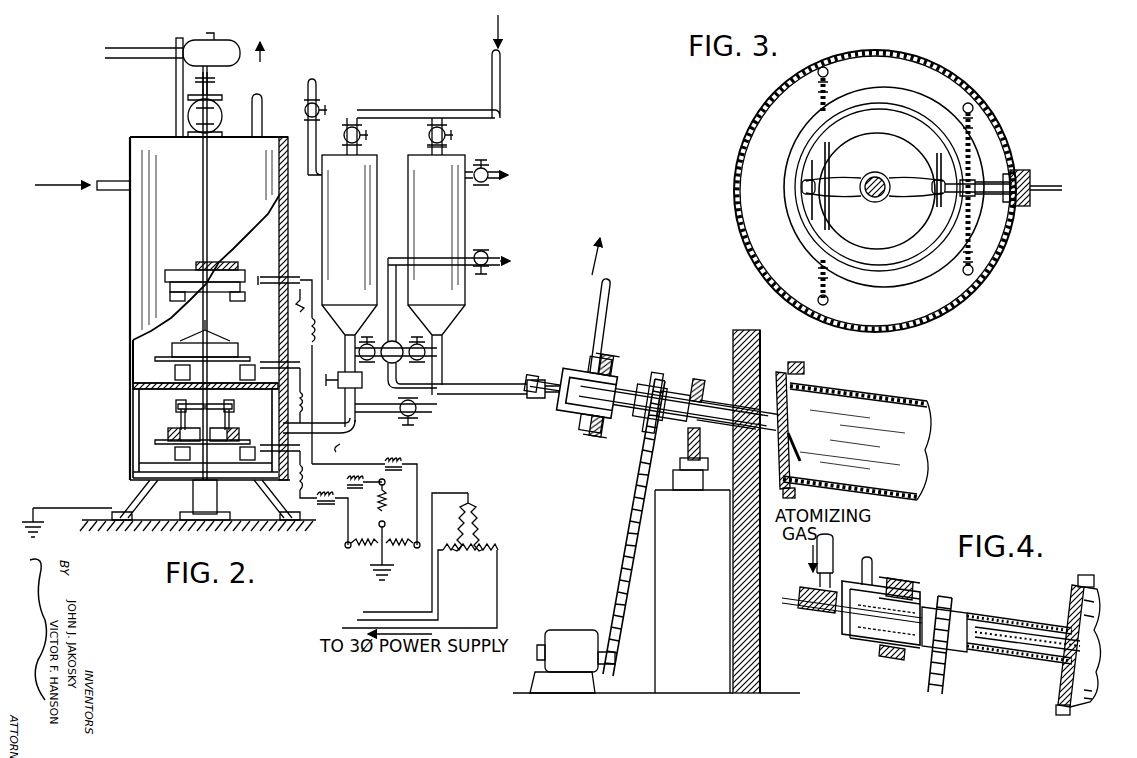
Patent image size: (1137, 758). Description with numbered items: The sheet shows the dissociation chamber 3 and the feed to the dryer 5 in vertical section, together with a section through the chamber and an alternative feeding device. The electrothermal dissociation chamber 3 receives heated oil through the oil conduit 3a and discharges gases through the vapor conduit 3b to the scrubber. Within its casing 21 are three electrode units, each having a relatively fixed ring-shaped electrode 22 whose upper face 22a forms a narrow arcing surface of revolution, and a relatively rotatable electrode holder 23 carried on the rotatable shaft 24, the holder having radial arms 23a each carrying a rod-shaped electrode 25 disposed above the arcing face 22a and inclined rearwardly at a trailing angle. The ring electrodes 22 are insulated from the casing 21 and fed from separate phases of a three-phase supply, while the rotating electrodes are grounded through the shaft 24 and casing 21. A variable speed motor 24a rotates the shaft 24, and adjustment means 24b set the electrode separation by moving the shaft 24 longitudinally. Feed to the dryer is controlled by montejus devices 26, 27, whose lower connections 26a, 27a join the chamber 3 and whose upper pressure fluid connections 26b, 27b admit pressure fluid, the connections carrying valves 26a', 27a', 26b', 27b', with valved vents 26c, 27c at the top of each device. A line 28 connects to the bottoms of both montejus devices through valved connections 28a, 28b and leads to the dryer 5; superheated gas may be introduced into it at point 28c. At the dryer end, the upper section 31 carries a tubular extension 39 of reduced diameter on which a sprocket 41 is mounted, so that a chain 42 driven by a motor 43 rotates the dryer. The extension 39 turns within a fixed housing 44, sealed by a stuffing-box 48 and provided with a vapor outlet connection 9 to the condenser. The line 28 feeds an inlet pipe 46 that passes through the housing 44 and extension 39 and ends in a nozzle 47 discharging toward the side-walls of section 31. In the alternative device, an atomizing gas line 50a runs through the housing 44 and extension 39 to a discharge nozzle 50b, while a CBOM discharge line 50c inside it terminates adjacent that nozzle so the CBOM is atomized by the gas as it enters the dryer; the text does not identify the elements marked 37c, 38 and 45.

In FIG. 2, the electrothermal dissociation chamber 3 is at (198, 301).
In FIG. 2, the oil conduit 3a is at (108, 181).
In FIG. 2, the vapor conduit 3b is at (262, 130).
In FIG. 2, the variable speed motor 24a is at (172, 85).
In FIG. 2, the adjustment means 24b is at (212, 92).
In FIG. 2, the rotatable shaft 24 is at (232, 285).
In FIG. 3, the rotatable shaft 24 is at (877, 176).
In FIG. 2, the casing 21 is at (128, 366).
In FIG. 2, the radial arm 23a is at (183, 402).
In FIG. 3, the radial arm 23a is at (860, 182).
In FIG. 2, the electrode holder 23 is at (218, 402).
In FIG. 2, the rod-shaped electrode 25 is at (180, 418).
In FIG. 3, the rod-shaped electrode 25 is at (935, 178).
In FIG. 2, the upper face 22a is at (170, 435).
In FIG. 3, the upper face 22a is at (899, 258).
In FIG. 2, the ring-shaped electrode 22 is at (240, 435).
In FIG. 2, the montejus device 26 is at (349, 272).
In FIG. 2, the lower connection 26a is at (378, 345).
In FIG. 2, the valve 26a' is at (338, 388).
In FIG. 2, the pressure fluid connection 26b is at (371, 138).
In FIG. 2, the valve 26b' is at (456, 71).
In FIG. 2, the valved vent 26c is at (313, 102).
In FIG. 2, the montejus device 27 is at (436, 256).
In FIG. 2, the lower connection 27a is at (360, 433).
In FIG. 2, the valve 27a' is at (428, 417).
In FIG. 2, the pressure fluid connection 27b is at (463, 152).
In FIG. 2, the valve 27b' is at (464, 133).
In FIG. 2, the valved vent 27c is at (498, 182).
In FIG. 2, the line 28 is at (500, 383).
In FIG. 2, the valved connection 28a is at (377, 338).
In FIG. 2, the valved connection 28b is at (412, 346).
In FIG. 2, the superheated gas introduction point 28c is at (385, 363).
In FIG. 2, the vapor outlet connection 9 is at (600, 311).
In FIG. 2, the inlet pipe 46 is at (720, 392).
In FIG. 2, the fixed housing 44 is at (585, 368).
In FIG. 4, the fixed housing 44 is at (882, 588).
In FIG. 2, the stuffing-box 48 is at (622, 364).
In FIG. 4, the stuffing-box 48 is at (915, 602).
In FIG. 2, the sprocket 41 is at (657, 378).
In FIG. 2, the support block 37c is at (697, 384).
In FIG. 2, the tubular extension 39 is at (641, 420).
In FIG. 4, the tubular extension 39 is at (1008, 627).
In FIG. 2, the chain 42 is at (625, 531).
In FIG. 4, the chain 42 is at (928, 676).
In FIG. 2, the support pedestal 38 is at (715, 500).
In FIG. 2, the motor 43 is at (656, 661).
In FIG. 2, the upper section 31 is at (853, 431).
In FIG. 2, the nozzle 47 is at (801, 459).
In FIG. 2, the dryer 5 is at (905, 503).
In FIG. 4, the atomizing gas pipe 45 is at (866, 567).
In FIG. 4, the atomizing gas line 50a is at (1031, 660).
In FIG. 4, the discharge nozzle 50b is at (1083, 645).
In FIG. 4, the CBOM discharge line 50c is at (1004, 648).